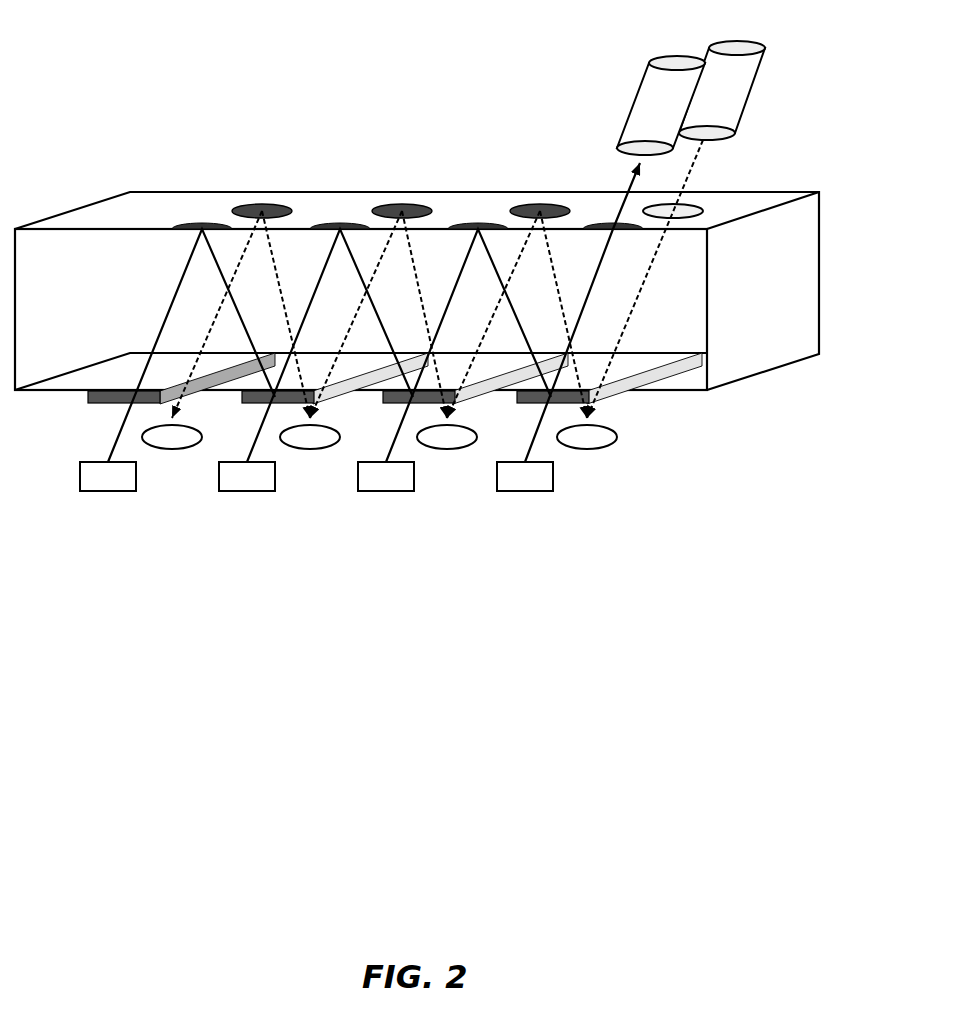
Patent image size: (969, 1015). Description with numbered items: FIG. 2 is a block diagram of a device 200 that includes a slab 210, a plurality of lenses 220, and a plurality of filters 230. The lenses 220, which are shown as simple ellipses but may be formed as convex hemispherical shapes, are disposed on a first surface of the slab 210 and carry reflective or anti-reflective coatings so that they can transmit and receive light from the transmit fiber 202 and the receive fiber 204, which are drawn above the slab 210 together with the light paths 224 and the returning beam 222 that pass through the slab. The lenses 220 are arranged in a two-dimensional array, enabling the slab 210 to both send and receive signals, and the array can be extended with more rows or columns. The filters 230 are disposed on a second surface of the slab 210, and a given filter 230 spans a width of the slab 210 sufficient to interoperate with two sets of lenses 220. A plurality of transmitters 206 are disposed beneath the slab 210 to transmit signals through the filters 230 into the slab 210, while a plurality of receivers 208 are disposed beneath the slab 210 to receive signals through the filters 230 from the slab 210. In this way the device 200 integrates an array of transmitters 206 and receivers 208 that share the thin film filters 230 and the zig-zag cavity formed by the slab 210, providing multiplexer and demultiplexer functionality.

The device 200 is at (236, 79).
The transmit fiber 202 is at (664, 59).
The receive fiber 204 is at (724, 44).
The transmitters 206 is at (86, 491).
The receivers 208 is at (592, 449).
The slab 210 is at (118, 207).
The lenses 220 is at (262, 204).
The reflected light beam 222 is at (727, 159).
The light paths 224 is at (449, 131).
The filters 230 is at (100, 403).